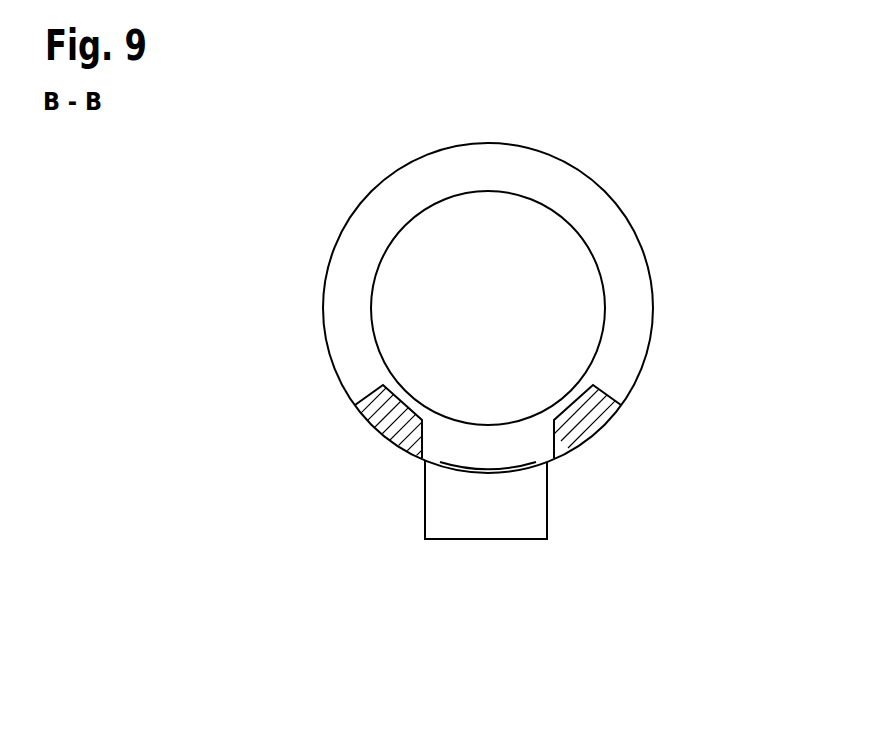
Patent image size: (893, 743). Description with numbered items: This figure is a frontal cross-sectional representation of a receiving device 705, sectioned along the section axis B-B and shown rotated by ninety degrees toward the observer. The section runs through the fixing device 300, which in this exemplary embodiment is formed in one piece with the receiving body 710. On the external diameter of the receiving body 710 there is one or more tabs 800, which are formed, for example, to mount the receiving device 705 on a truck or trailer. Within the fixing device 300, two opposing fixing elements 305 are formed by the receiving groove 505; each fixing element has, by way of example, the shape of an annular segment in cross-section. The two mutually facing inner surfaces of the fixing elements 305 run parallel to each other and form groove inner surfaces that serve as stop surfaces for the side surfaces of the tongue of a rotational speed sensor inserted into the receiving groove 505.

The receiving device 705 is at (372, 131).
The receiving body 710 is at (563, 178).
The fixing device 300 is at (638, 425).
The fixing elements 305 is at (386, 418).
The receiving groove 505 is at (517, 472).
The tabs 800 is at (477, 522).